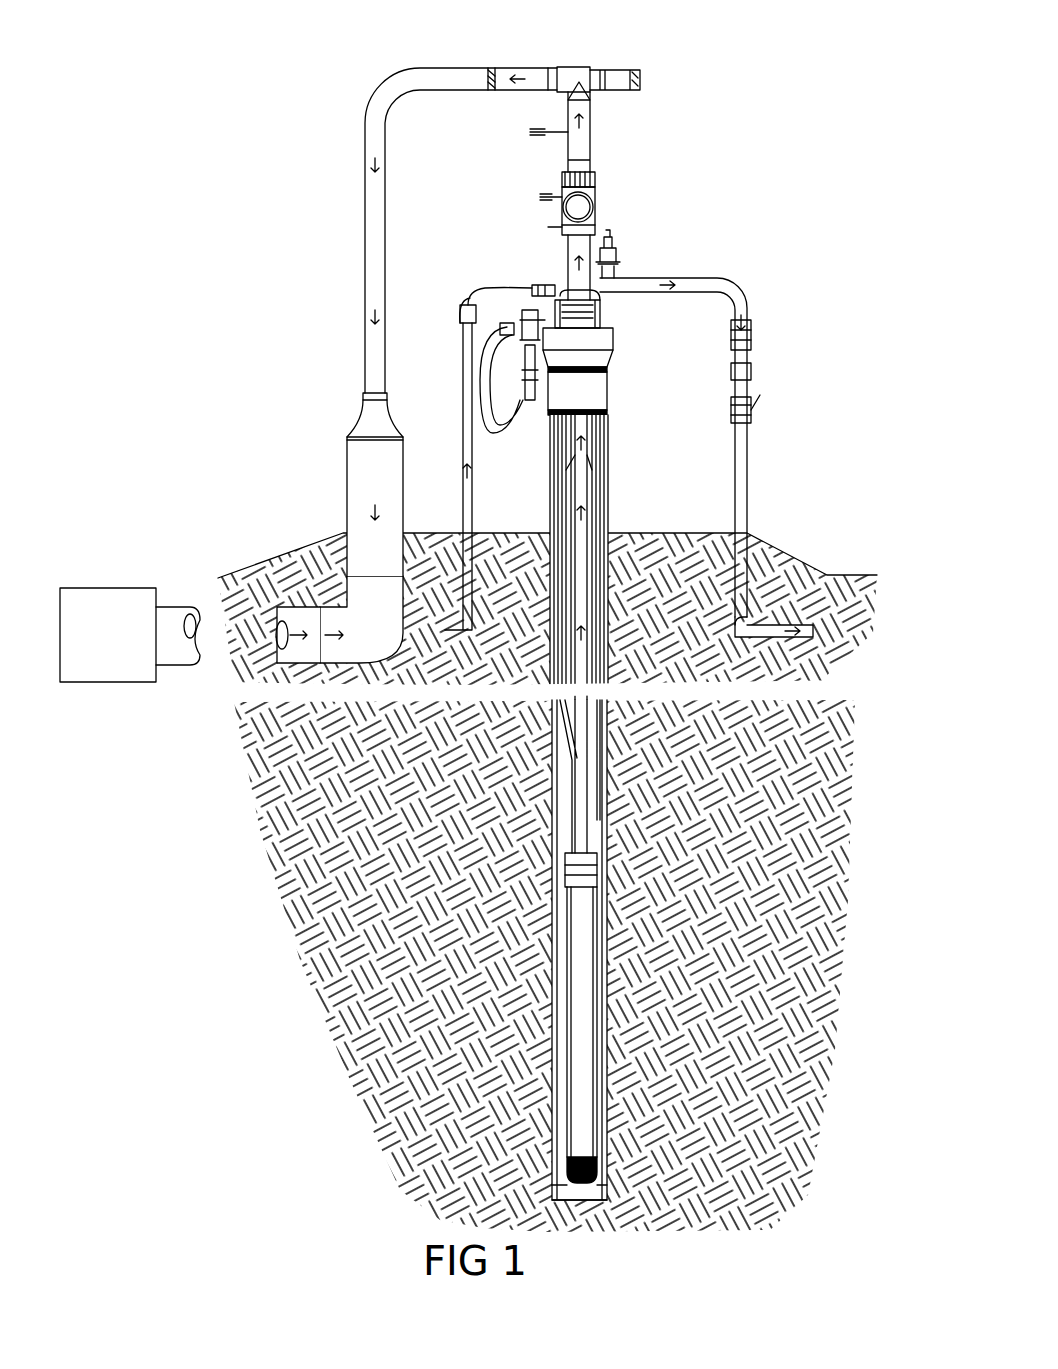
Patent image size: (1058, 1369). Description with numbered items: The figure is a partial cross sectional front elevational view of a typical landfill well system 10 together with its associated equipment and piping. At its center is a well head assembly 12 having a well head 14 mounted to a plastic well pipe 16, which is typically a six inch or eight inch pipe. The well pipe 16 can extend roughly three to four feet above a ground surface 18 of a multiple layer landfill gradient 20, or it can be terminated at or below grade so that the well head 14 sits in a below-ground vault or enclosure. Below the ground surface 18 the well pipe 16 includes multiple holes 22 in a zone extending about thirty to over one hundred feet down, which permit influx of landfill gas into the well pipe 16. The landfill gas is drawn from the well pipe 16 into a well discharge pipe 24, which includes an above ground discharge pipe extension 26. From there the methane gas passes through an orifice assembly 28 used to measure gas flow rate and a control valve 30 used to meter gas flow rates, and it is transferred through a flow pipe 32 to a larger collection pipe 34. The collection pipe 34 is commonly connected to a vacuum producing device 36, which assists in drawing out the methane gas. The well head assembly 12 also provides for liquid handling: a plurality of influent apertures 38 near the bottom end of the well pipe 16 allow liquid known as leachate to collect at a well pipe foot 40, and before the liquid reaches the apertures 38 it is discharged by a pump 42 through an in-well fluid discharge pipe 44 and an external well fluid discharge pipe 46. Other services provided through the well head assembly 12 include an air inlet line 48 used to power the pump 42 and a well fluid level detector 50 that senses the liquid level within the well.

The landfill well system 10 is at (795, 300).
The well head assembly 12 is at (660, 380).
The well head 14 is at (607, 360).
The plastic well pipe 16 is at (608, 470).
The ground surface 18 is at (510, 460).
The multiple layer landfill gradient 20 is at (680, 540).
The holes 22 is at (612, 840).
The well discharge pipe 24 is at (600, 435).
The above ground discharge pipe extension 26 is at (568, 270).
The orifice assembly 28 is at (590, 223).
The control valve 30 is at (575, 72).
The flow pipe 32 is at (385, 270).
The collection pipe 34 is at (300, 605).
The vacuum producing device 36 is at (100, 600).
The influent apertures 38 is at (600, 1175).
The well pipe foot 40 is at (555, 1160).
The pump 42 is at (565, 1000).
The in-well fluid discharge pipe 44 is at (590, 526).
The external well fluid discharge pipe 46 is at (747, 460).
The air inlet line 48 is at (463, 500).
The well fluid level detector 50 is at (614, 262).